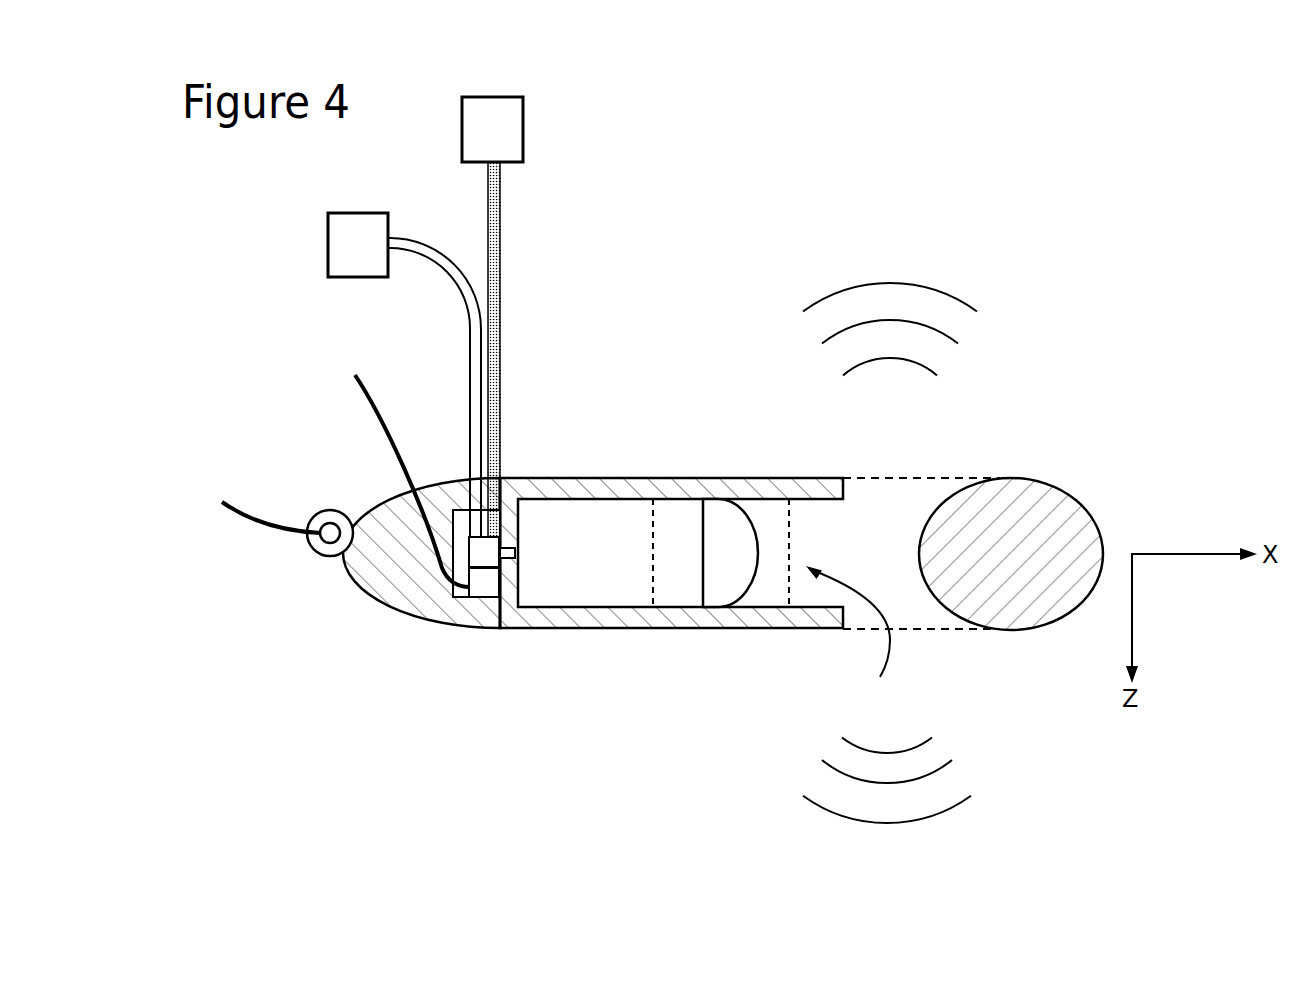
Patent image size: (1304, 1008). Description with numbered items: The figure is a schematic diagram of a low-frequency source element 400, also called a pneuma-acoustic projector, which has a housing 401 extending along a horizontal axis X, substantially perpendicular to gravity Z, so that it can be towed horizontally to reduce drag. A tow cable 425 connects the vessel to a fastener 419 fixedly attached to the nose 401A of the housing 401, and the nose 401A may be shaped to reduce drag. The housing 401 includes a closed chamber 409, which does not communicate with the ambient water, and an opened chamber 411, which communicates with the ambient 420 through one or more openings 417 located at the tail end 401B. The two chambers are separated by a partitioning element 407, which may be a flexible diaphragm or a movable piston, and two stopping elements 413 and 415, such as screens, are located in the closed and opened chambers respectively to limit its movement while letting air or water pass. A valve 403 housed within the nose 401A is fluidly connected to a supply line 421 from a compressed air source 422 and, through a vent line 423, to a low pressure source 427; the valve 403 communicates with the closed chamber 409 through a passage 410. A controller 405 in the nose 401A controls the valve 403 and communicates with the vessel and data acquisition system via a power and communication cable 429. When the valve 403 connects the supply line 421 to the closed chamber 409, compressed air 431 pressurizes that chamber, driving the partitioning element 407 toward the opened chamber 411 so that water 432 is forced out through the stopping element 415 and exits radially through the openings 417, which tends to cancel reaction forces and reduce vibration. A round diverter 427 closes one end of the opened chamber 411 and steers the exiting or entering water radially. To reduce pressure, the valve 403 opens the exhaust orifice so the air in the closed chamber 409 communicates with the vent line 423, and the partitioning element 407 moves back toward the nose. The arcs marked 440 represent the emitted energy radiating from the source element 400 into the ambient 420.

The low-frequency source element 400 is at (696, 248).
The housing 401 is at (582, 478).
The nose 401A is at (393, 607).
The tail end 401B is at (920, 630).
The valve 403 is at (477, 550).
The controller 405 is at (480, 590).
The partitioning element 407 is at (752, 533).
The closed chamber 409 is at (605, 582).
The passage 410 is at (512, 552).
The opened chamber 411 is at (852, 641).
The first stopping element 413 is at (675, 582).
The second stopping element 415 is at (785, 582).
The openings 417 is at (933, 478).
The fastener 419 is at (330, 510).
The ambient 420 is at (1056, 733).
The supply line 421 is at (468, 413).
The compressed air source 422 is at (328, 240).
The vent line 423 is at (502, 377).
The tow cable 425 is at (242, 508).
The low pressure source / diverter 427 is at (523, 132).
The power and communication cable 429 is at (377, 410).
The compressed air 431 is at (574, 593).
The water 432 is at (858, 541).
The emitted waves 440 is at (925, 287).